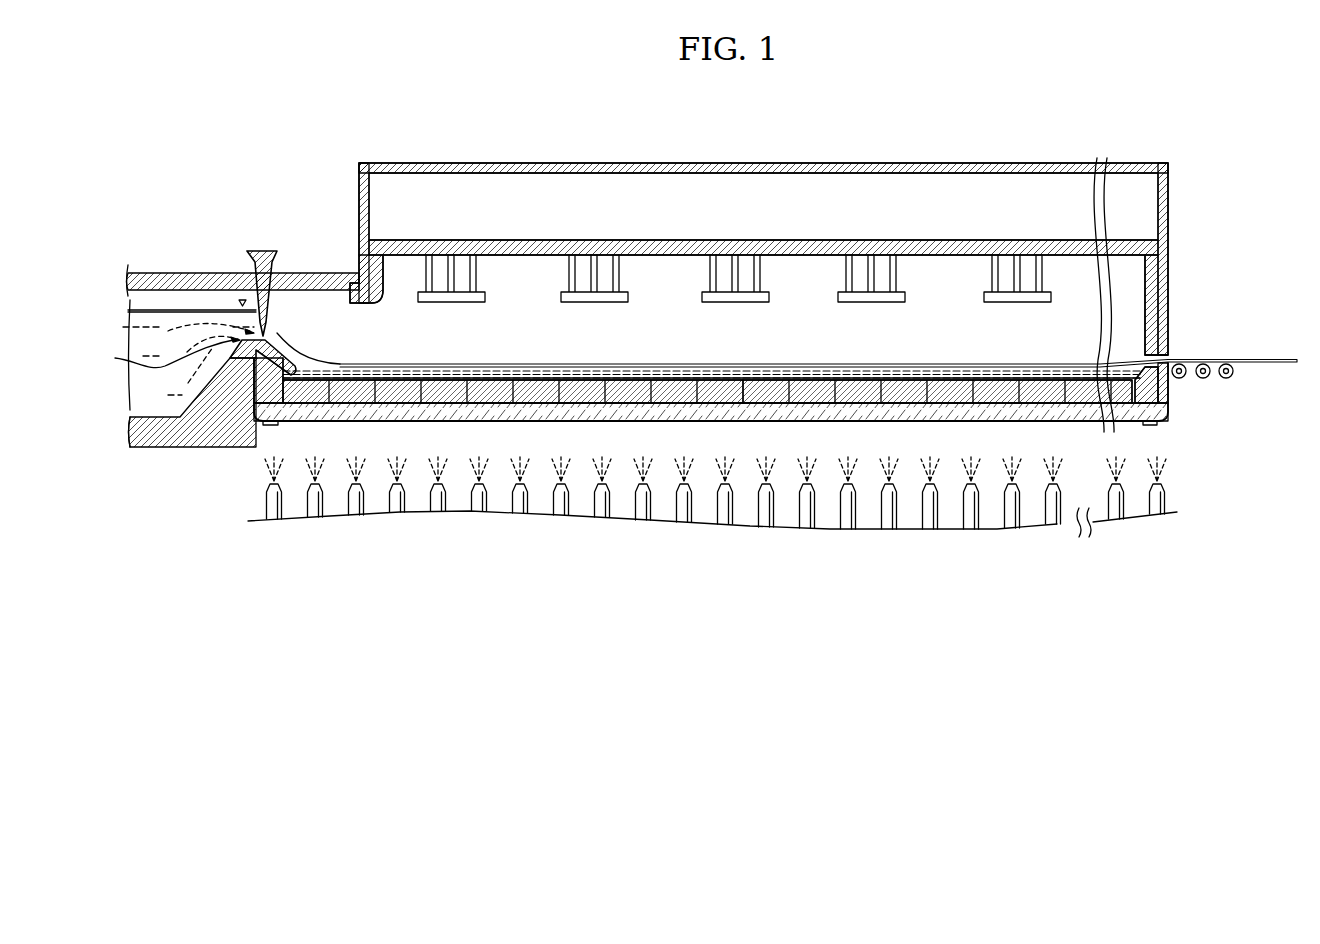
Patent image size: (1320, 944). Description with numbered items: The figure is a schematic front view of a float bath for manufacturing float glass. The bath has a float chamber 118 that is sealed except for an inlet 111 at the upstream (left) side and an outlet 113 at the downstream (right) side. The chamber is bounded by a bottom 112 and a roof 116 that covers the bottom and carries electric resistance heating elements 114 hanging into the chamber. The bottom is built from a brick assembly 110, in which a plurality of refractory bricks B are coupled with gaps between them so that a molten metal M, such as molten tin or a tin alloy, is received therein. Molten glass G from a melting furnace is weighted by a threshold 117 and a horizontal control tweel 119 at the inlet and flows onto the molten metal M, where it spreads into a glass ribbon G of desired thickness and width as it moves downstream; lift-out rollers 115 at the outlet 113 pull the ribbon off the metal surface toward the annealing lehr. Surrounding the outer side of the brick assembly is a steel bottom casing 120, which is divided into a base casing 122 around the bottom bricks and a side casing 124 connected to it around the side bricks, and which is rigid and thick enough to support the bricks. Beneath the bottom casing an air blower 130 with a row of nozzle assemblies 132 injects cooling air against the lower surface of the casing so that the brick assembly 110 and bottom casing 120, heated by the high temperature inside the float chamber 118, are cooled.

The brick assembly 110 is at (403, 389).
The inlet 111 is at (280, 332).
The bottom 112 is at (743, 409).
The outlet 113 is at (1175, 351).
The electric resistance heating elements 114 is at (847, 275).
The lift-out rollers 115 is at (1208, 378).
The roof 116 is at (1182, 211).
The threshold 117 is at (117, 358).
The float chamber 118 is at (172, 233).
The horizontal control tweel 119 is at (259, 253).
The bottom casing 120 is at (828, 424).
The base casing 122 is at (942, 421).
The side casing 124 is at (1168, 403).
The air blower 130 is at (678, 497).
The nozzle assemblies 132 is at (268, 487).
The bricks B is at (768, 395).
The molten glass / glass ribbon G is at (1275, 357).
The molten metal M is at (1002, 369).